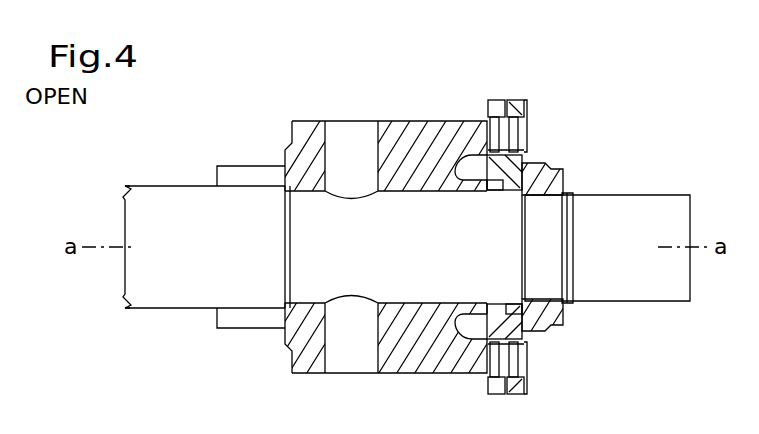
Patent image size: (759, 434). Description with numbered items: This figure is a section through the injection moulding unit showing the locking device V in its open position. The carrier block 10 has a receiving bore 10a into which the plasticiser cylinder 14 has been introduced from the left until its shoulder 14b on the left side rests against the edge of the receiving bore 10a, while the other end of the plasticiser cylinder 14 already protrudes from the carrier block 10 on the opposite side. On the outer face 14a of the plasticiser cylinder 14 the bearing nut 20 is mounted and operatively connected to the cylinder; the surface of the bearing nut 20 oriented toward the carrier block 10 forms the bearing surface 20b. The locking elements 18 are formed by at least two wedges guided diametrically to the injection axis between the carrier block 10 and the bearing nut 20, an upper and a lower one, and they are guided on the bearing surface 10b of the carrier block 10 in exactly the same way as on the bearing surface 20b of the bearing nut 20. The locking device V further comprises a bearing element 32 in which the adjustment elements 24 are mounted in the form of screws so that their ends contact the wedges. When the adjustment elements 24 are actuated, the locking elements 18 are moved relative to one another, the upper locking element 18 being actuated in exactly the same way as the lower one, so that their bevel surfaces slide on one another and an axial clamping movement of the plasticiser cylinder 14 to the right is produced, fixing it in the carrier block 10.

The carrier block 10 is at (418, 135).
The receiving bore 10a is at (401, 196).
The bearing surface 10b is at (487, 330).
The plasticiser cylinder 14 is at (212, 255).
The outer face 14a is at (635, 262).
The shoulder 14b is at (284, 186).
The locking elements 18 is at (527, 148).
The bearing nut 20 is at (548, 172).
The bearing surface 20b is at (503, 194).
The adjustment elements 24 is at (489, 101).
The bearing element 32 is at (528, 116).
The locking device V is at (511, 90).